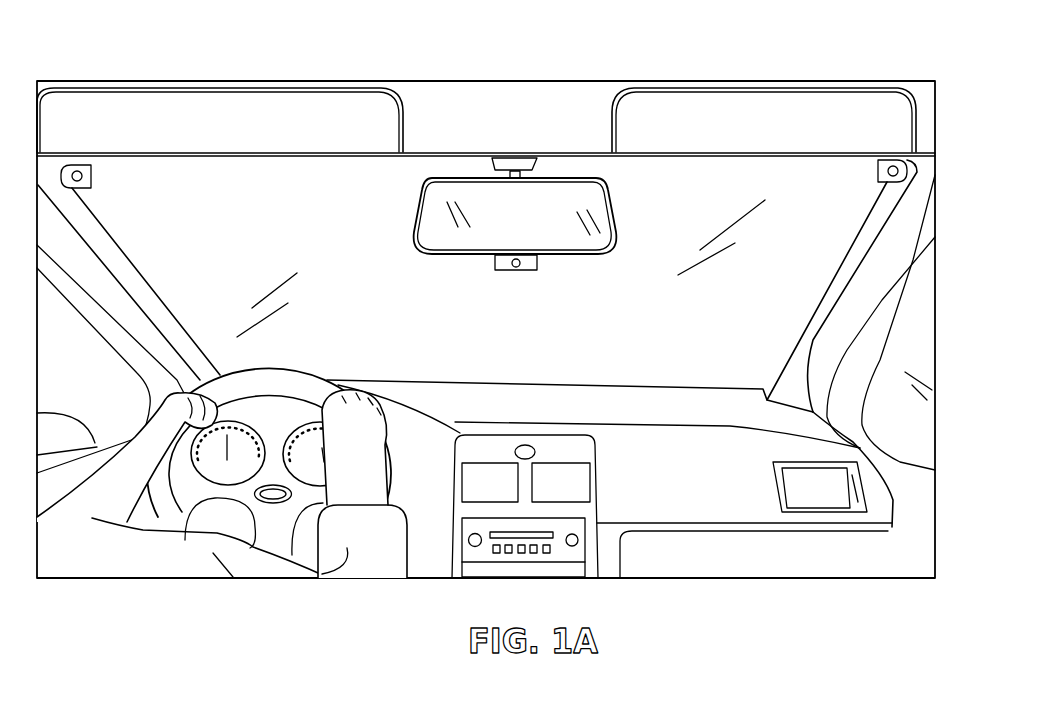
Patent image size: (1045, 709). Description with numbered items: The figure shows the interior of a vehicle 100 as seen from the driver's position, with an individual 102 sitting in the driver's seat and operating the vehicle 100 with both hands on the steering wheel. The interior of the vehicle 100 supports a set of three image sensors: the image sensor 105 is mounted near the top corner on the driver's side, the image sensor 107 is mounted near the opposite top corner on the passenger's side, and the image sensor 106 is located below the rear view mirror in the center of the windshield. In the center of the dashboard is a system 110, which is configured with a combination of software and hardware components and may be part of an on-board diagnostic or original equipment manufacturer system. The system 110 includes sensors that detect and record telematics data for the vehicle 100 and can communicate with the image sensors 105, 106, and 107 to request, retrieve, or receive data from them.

The vehicle 100 is at (565, 52).
The individual 102 is at (106, 560).
The image sensor 105 is at (93, 177).
The image sensor 106 is at (523, 271).
The image sensor 107 is at (877, 170).
The system 110 is at (562, 448).